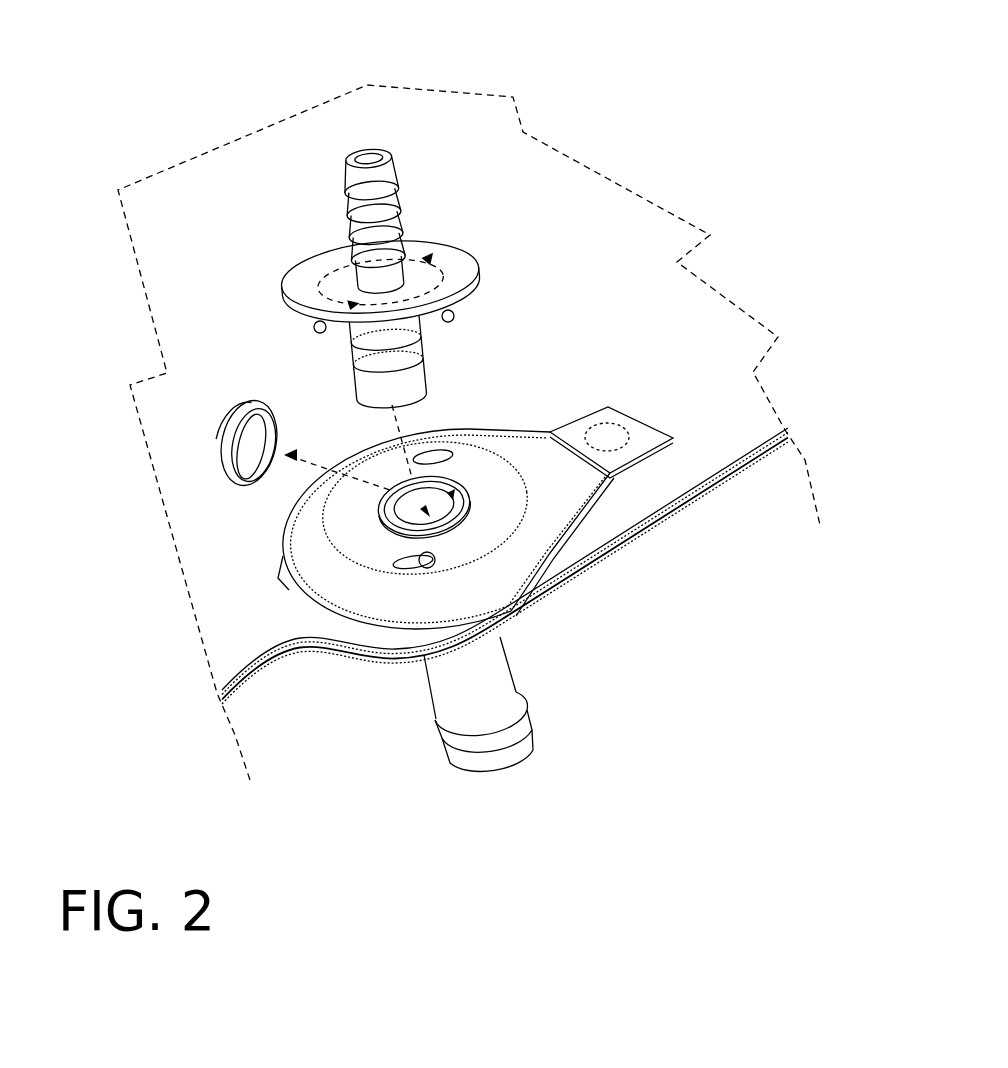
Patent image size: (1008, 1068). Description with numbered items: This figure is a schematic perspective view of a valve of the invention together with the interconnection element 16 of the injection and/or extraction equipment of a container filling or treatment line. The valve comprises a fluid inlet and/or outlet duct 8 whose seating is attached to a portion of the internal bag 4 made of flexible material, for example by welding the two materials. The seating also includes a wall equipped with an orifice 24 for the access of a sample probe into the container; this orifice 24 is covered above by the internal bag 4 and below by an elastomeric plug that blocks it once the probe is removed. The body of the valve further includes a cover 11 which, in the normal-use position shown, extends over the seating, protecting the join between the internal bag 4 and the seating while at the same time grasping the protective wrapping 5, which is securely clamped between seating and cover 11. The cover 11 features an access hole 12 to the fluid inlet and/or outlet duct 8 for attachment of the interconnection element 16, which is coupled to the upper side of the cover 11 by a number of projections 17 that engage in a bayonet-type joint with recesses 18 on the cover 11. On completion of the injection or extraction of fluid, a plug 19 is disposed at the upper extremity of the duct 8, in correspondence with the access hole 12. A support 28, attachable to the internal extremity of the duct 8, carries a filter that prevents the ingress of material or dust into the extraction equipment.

The internal bag 4 is at (675, 515).
The protective wrapping 5 is at (710, 490).
The fluid inlet and/or outlet duct 8 is at (388, 518).
The cover 11 is at (318, 574).
The access hole 12 is at (450, 492).
The interconnection element 16 is at (394, 224).
The projections 17 is at (314, 326).
The recesses 18 is at (437, 452).
The plug 19 is at (226, 448).
The orifice 24 is at (605, 440).
The support 28 is at (517, 755).